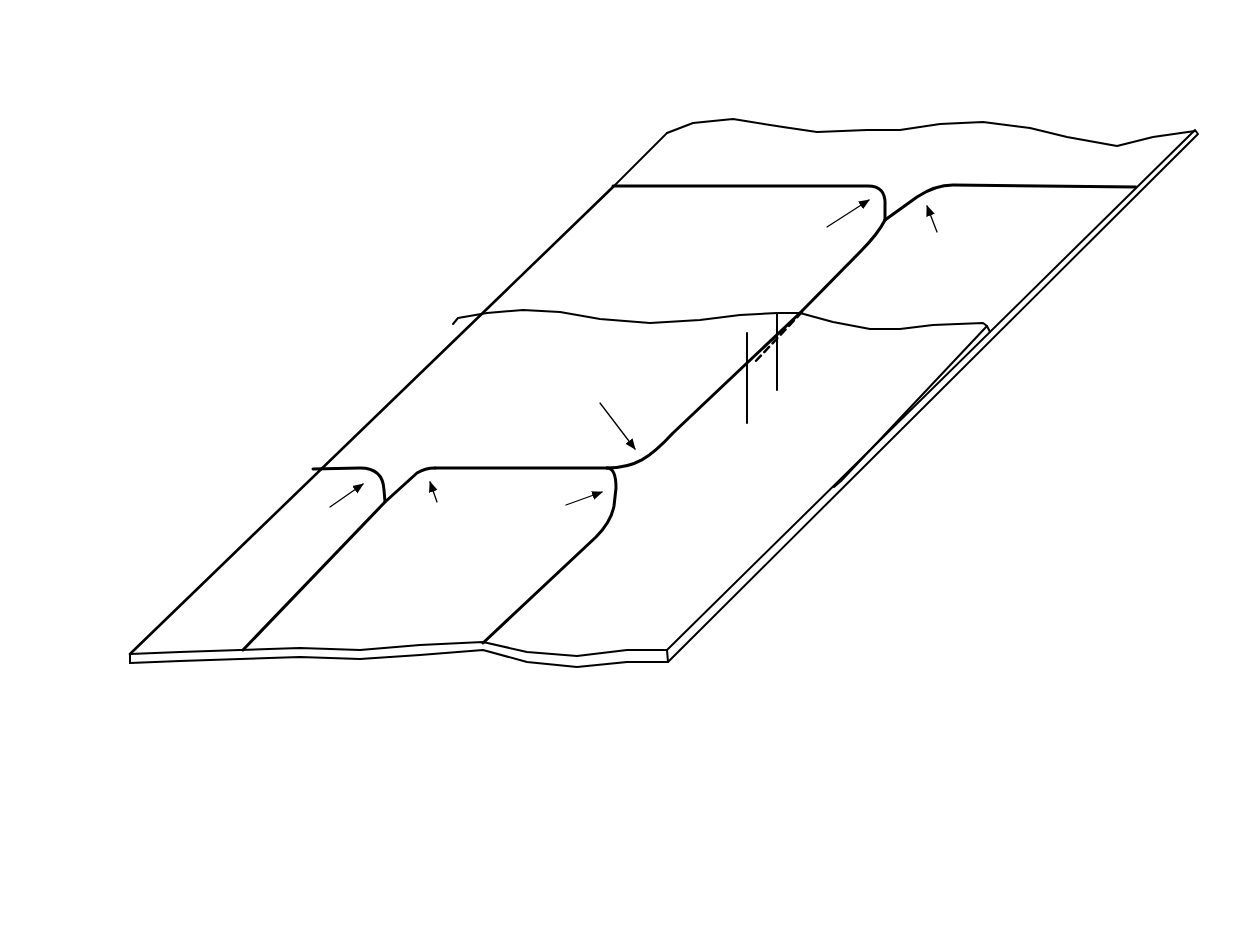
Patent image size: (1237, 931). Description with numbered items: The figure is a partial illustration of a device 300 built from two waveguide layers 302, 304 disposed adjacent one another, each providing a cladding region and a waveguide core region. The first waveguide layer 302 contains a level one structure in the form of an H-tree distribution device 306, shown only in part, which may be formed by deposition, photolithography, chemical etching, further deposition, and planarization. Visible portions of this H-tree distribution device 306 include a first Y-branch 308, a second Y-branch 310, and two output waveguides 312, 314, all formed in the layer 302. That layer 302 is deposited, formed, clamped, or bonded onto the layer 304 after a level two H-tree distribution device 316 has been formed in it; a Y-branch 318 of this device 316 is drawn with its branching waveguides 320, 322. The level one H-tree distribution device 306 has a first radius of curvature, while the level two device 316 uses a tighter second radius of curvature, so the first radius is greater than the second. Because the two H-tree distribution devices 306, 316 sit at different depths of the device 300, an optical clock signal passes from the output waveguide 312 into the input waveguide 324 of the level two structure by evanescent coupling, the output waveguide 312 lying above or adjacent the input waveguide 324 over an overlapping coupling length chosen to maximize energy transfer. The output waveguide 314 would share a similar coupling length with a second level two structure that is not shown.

The device 300 is at (452, 126).
The first waveguide layer 302 is at (713, 612).
The second waveguide layer 304 is at (1080, 256).
The H-tree distribution device 306 is at (421, 434).
The first Y-branch 308 is at (388, 503).
The second Y-branch 310 is at (607, 472).
The output waveguide 312 is at (742, 415).
The output waveguide 314 is at (492, 630).
The level 2 H-tree distribution device 316 is at (840, 167).
The Y-branch 318 is at (878, 236).
The branching waveguide 320 is at (672, 188).
The branching waveguide 322 is at (995, 188).
The input waveguide 324 is at (824, 292).